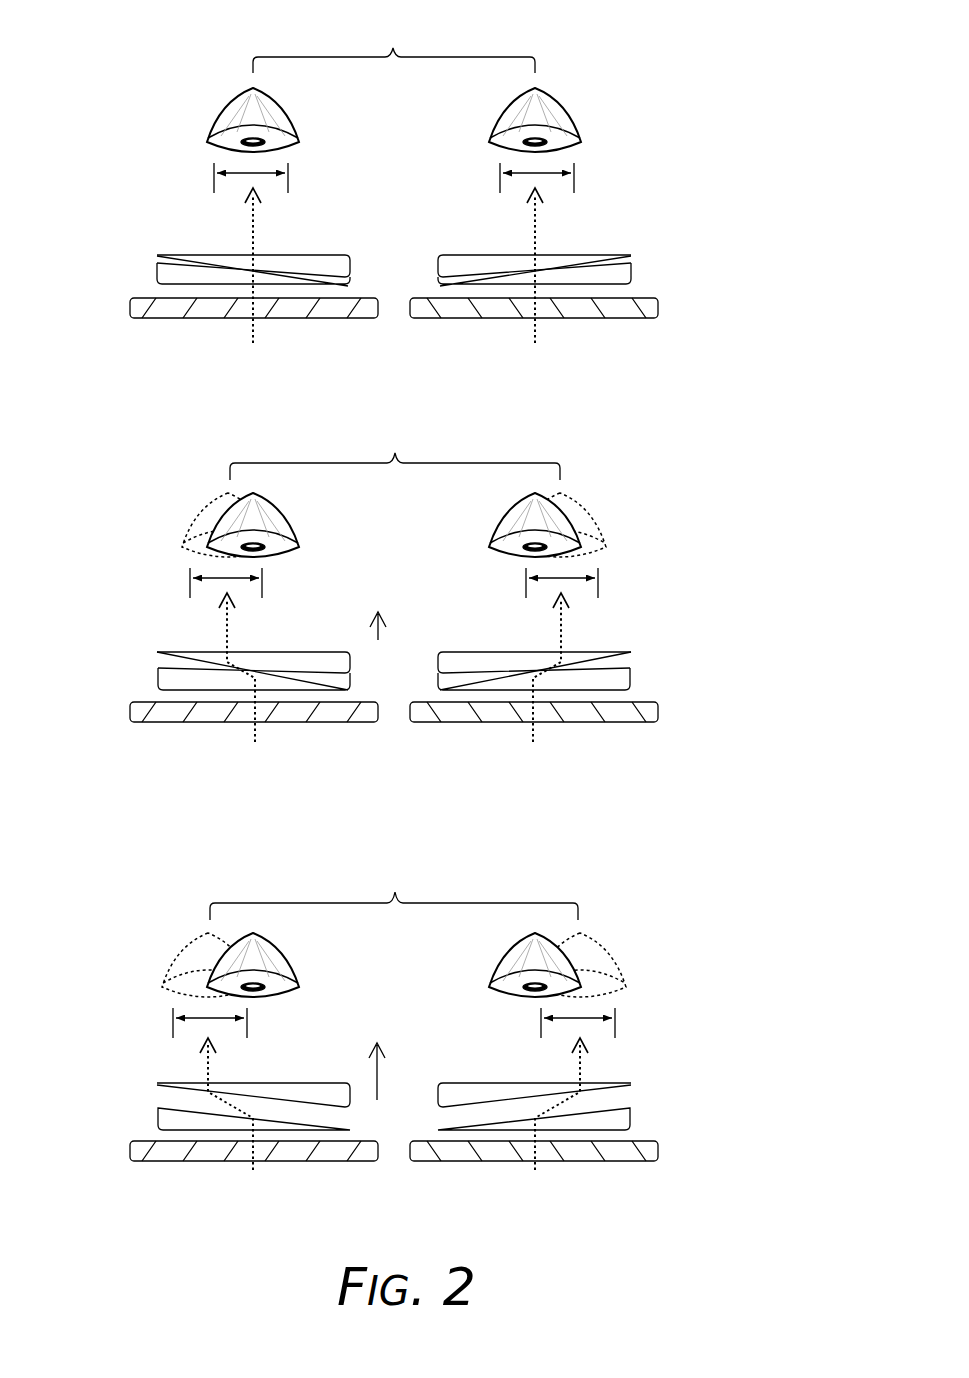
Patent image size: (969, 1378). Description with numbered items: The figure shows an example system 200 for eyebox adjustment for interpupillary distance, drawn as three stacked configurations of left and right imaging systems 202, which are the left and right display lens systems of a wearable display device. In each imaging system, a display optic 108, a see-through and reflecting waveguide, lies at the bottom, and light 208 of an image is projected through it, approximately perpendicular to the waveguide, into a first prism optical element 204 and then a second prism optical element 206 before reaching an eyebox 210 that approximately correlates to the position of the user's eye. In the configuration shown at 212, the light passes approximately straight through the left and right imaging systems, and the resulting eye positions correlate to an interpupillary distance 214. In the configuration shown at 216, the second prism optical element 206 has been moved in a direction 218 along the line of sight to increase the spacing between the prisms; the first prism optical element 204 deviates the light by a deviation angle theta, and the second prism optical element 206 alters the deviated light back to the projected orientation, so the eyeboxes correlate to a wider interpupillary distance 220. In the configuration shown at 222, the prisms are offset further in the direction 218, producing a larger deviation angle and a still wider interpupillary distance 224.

The example system 200 is at (638, 62).
The imaging systems 202 is at (405, 135).
The first prism optical element 204 is at (155, 262).
The second prism optical element 206 is at (190, 254).
The display optic 108 is at (165, 318).
The light 208 is at (234, 378).
The eyebox 210 is at (303, 184).
The first example configuration 212 is at (187, 100).
The interpupillary distance 214 is at (374, 39).
The second example configuration 216 is at (153, 517).
The direction 218 is at (359, 596).
The interpupillary distance 220 is at (376, 443).
The third example configuration 222 is at (132, 957).
The interpupillary distance 224 is at (374, 884).